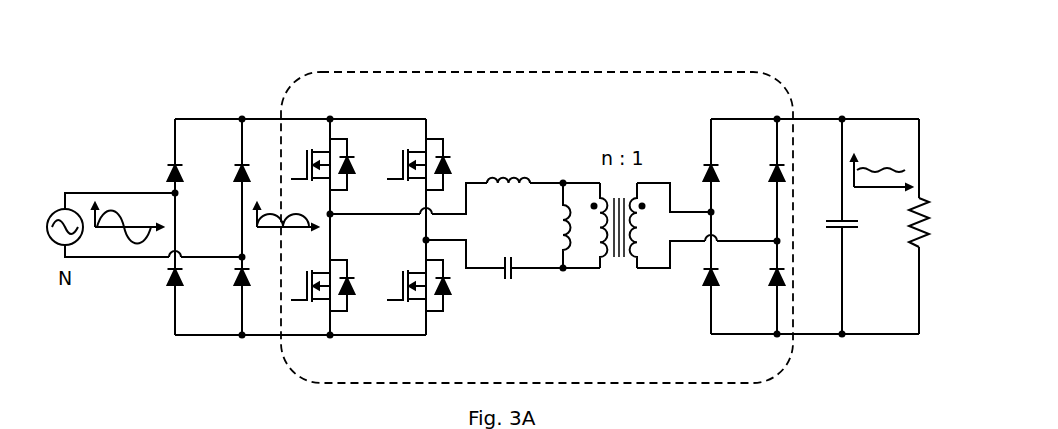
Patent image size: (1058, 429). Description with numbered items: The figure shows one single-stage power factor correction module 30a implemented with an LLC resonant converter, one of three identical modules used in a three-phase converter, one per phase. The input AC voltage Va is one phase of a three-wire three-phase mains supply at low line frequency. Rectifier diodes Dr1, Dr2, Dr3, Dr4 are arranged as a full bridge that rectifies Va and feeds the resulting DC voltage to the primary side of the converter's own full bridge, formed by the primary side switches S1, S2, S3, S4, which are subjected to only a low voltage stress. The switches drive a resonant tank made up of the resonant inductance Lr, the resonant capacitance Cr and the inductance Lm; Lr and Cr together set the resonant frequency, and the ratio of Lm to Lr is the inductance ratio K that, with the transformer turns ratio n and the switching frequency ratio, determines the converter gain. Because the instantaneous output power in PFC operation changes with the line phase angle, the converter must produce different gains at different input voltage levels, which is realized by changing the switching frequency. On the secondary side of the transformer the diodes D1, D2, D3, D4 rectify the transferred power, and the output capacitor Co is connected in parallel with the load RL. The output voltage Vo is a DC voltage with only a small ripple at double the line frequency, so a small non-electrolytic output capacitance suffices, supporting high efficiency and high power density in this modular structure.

The single-stage PFC module 30a is at (713, 72).
The input AC voltage Va is at (65, 206).
The rectifier diode Dr1 is at (158, 174).
The rectifier diode Dr2 is at (158, 279).
The rectifier diode Dr3 is at (226, 174).
The rectifier diode Dr4 is at (226, 279).
The primary side switch S1 is at (319, 164).
The switch S2 is at (319, 285).
The switch S3 is at (413, 164).
The switch S4 is at (413, 285).
The resonant inductance Lr is at (508, 167).
The inductance Lm is at (551, 225).
The resonant capacitance Cr is at (508, 283).
The output rectifier diode D1 is at (697, 172).
The output rectifier diode D2 is at (697, 277).
The output rectifier diode D3 is at (763, 172).
The output rectifier diode D4 is at (763, 277).
The output capacitor Co is at (829, 227).
The load RL is at (931, 222).
The output voltage Vo is at (881, 229).